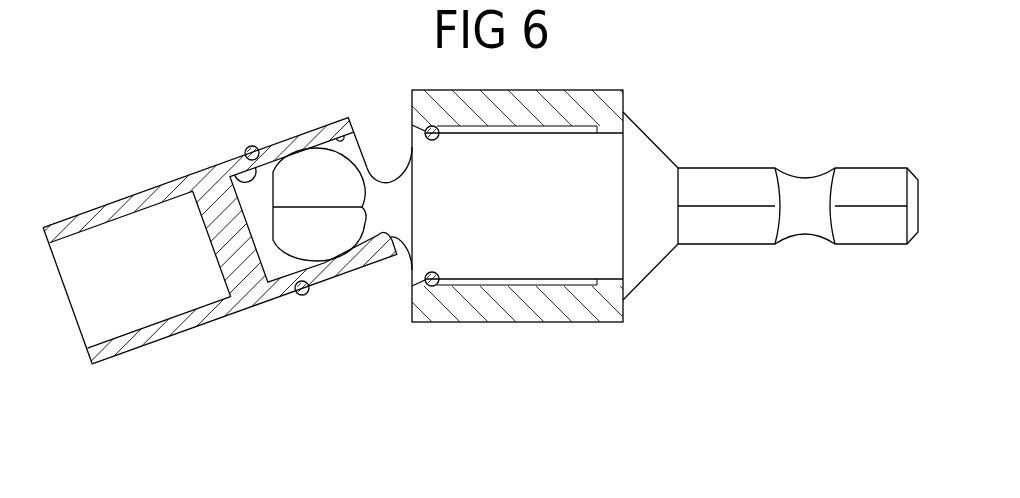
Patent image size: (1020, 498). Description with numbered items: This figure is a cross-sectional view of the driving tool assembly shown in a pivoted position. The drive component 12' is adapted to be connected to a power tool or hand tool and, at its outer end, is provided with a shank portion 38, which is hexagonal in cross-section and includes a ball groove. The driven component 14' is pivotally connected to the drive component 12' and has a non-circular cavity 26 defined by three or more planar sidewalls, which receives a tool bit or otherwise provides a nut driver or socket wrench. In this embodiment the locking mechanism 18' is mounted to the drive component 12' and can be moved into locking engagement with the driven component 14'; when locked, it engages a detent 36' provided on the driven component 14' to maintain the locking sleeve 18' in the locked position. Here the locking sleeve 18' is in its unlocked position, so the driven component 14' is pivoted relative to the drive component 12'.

The drive component 12' is at (569, 200).
The driven component 14' is at (223, 112).
The locking mechanism 18' is at (512, 243).
The non-circular cavity 26 is at (223, 166).
The detent 36' is at (263, 320).
The shank portion 38 is at (731, 232).